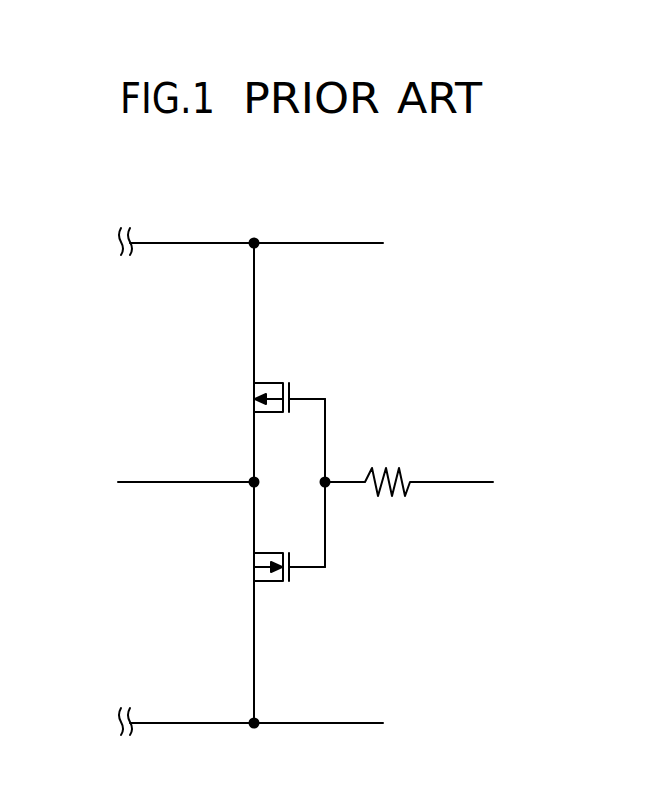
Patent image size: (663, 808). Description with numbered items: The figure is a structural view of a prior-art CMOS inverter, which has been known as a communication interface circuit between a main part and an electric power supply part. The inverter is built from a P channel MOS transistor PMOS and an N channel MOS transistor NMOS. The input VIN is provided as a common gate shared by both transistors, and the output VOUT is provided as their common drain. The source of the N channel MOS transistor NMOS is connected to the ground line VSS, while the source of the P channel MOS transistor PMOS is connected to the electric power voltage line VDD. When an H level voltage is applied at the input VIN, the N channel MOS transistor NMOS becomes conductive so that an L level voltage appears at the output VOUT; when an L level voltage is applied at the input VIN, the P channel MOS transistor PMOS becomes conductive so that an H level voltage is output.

The P channel MOS transistor PMOS is at (299, 383).
The N channel MOS transistor NMOS is at (299, 583).
The output VOUT is at (151, 484).
The input VIN is at (432, 483).
The electric power voltage line VDD is at (327, 258).
The ground line VSS is at (334, 738).